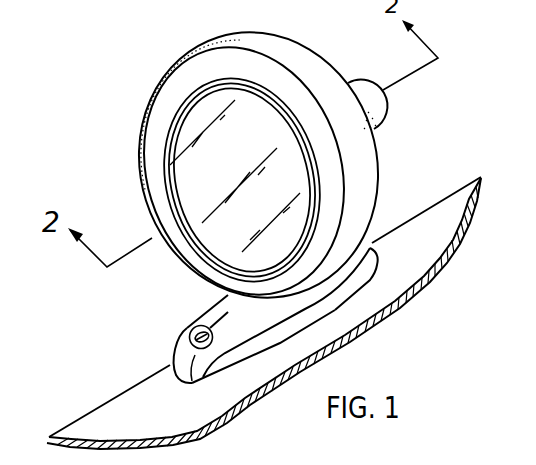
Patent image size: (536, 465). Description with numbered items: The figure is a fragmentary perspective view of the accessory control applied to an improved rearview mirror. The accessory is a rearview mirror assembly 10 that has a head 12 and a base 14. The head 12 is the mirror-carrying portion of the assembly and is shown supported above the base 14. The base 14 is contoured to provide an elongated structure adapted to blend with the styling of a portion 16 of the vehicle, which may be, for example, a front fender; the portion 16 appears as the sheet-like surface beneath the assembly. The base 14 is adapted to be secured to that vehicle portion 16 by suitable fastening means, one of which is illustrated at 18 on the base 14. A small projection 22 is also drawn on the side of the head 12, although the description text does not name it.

The rearview mirror assembly 10 is at (315, 74).
The head 12 is at (366, 184).
The base 14 is at (332, 303).
The portion of the vehicle 16 is at (445, 247).
The fastening means 18 is at (190, 332).
The adjustment knob 22 is at (382, 107).